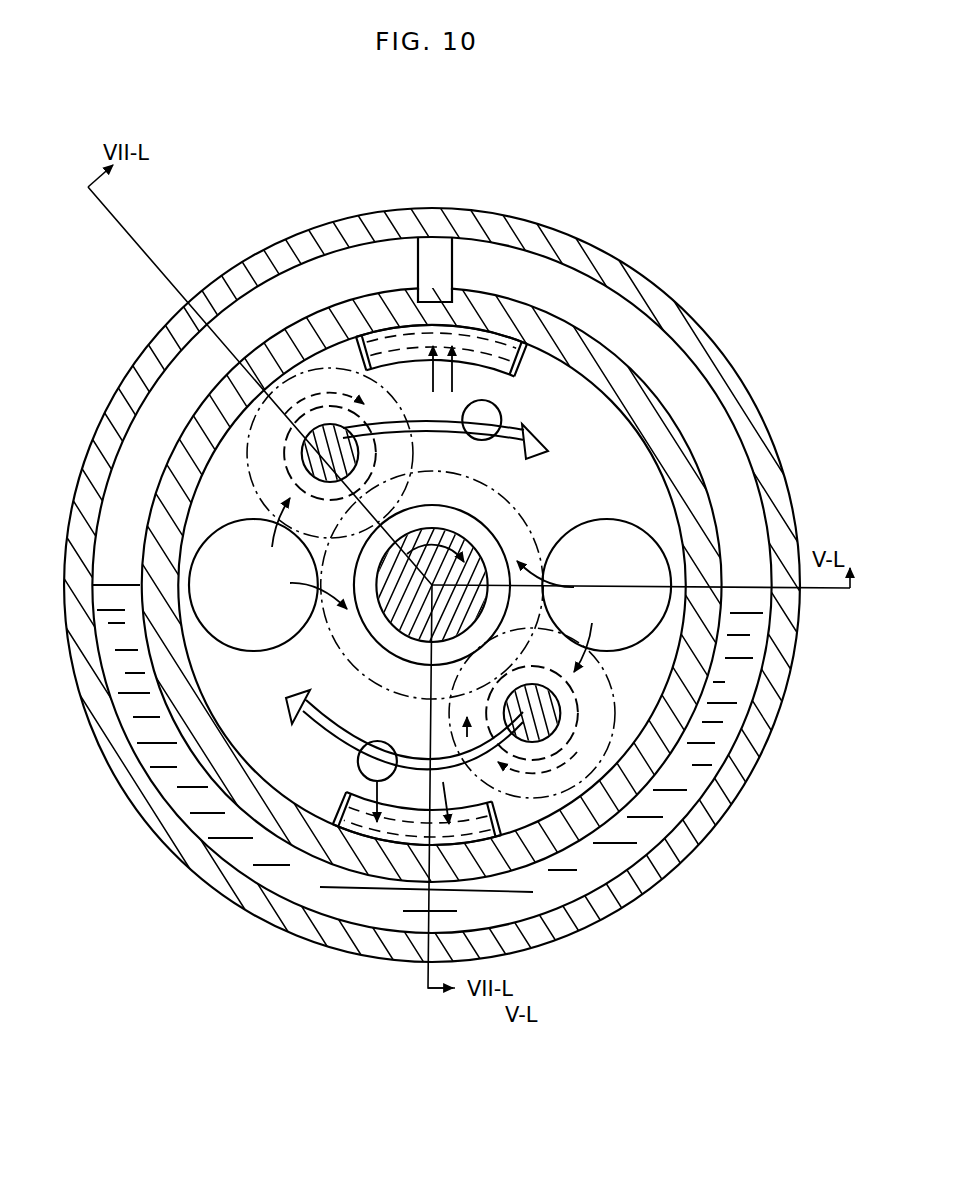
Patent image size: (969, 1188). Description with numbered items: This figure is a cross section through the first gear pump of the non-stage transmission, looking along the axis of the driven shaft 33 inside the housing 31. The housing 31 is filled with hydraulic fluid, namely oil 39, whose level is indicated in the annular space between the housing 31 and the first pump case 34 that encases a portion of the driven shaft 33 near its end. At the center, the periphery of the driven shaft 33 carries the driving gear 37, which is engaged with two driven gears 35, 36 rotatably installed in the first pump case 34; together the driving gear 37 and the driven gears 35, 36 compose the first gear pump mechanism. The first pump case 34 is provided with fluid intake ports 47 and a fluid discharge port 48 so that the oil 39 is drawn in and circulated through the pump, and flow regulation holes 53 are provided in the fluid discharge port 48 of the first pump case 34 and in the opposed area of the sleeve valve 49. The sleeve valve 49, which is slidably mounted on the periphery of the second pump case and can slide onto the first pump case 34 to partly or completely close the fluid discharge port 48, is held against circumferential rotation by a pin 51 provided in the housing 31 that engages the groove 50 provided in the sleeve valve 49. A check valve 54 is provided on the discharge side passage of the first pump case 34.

The housing 31 is at (683, 332).
The driven shaft 33 is at (540, 540).
The first pump case 34 is at (242, 722).
The driven gear 35 is at (307, 447).
The driven gear 36 is at (578, 757).
The driving gear 37 is at (436, 580).
The oil 39 is at (575, 873).
The fluid intake ports 47 is at (623, 597).
The fluid discharge port 48 is at (426, 840).
The sleeve valve 49 is at (695, 527).
The groove 50 is at (410, 288).
The pin 51 is at (438, 263).
The flow regulation holes 53 is at (531, 350).
The check valve 54 is at (358, 754).